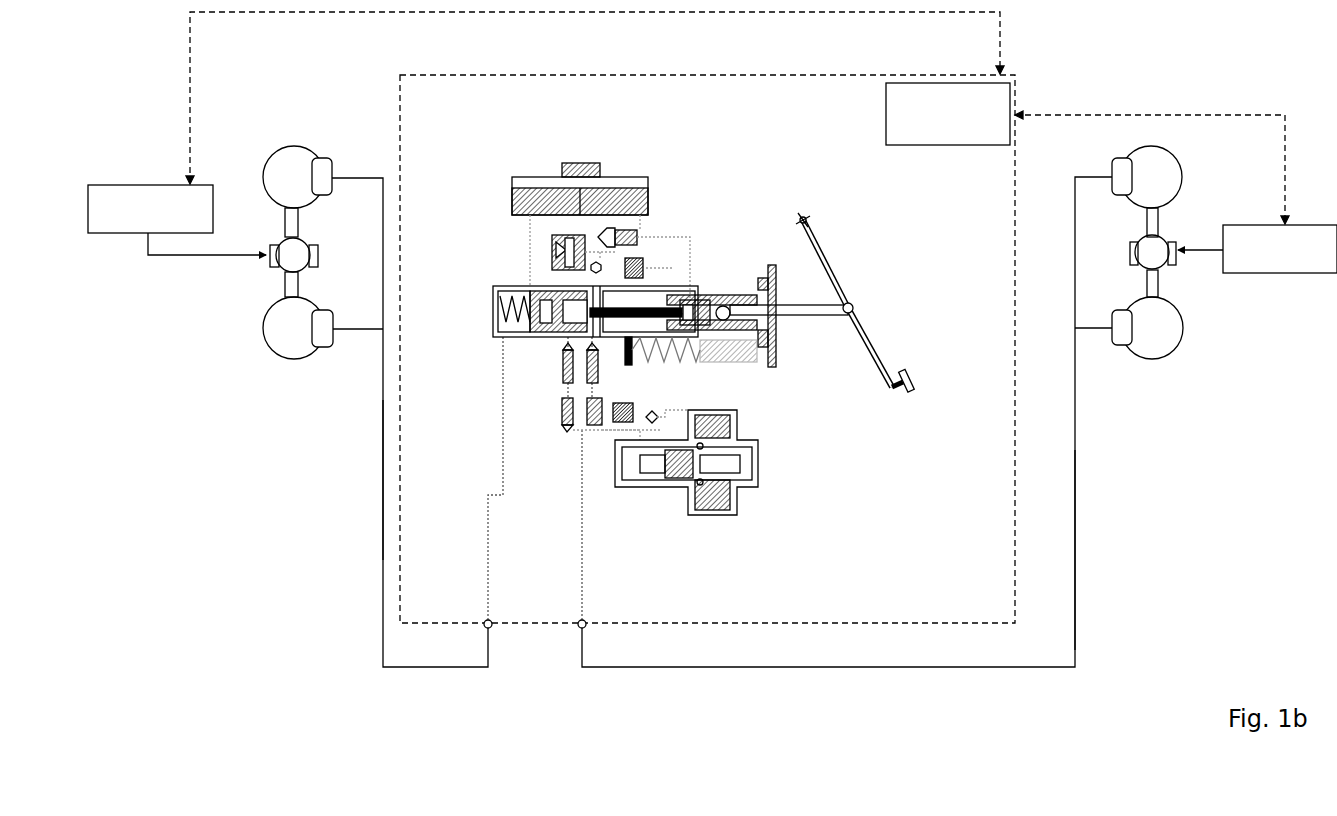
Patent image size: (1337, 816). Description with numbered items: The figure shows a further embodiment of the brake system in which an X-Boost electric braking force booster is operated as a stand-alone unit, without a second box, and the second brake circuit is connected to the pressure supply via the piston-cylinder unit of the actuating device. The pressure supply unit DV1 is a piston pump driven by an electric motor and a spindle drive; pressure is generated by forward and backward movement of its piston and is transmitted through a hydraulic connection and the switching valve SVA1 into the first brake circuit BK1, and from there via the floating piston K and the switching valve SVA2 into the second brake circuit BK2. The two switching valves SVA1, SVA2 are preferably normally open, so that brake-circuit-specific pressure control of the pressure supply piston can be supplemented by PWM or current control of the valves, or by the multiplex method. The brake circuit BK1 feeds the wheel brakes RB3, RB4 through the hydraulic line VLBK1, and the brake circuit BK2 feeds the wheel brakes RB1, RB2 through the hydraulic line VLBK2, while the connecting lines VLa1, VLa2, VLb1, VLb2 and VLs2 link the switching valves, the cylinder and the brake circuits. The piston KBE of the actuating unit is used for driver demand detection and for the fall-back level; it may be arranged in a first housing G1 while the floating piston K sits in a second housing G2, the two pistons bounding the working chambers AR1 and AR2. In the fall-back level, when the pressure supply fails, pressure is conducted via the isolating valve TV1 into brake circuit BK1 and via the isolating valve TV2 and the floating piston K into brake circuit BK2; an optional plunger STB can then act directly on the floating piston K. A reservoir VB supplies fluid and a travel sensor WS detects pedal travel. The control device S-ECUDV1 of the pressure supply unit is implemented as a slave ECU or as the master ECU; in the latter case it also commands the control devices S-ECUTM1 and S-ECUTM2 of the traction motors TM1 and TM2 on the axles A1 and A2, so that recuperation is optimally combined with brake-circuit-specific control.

The open-loop and closed-loop control device of the second traction motor S-ECUTM2 is at (150, 209).
The open-loop and closed-loop control device of the pressure supply unit S-ECUDV1 is at (948, 114).
The open-loop and closed-loop control device of the first traction motor S-ECUTM1 is at (1280, 249).
The pressure supply unit DV1 is at (857, 75).
The wheel brake 1 RB1 is at (318, 160).
The wheel brake 2 RB2 is at (335, 327).
The wheel brake 3 RB3 is at (1125, 158).
The wheel brake 4 RB4 is at (1120, 347).
The first axle A1 is at (1160, 226).
The second axle A2 is at (293, 232).
The traction motor TM1 is at (1157, 258).
The traction motor TM2 is at (267, 257).
The brake circuit BK1 is at (1073, 258).
The brake circuit BK2 is at (382, 230).
The hydraulic line of first brake circuit VLBK1 is at (1080, 575).
The hydraulic line of second brake circuit VLBK2 is at (382, 478).
The hydraulic connecting line s2 VLs2 is at (485, 523).
The hydraulic connecting line a1 VLa1 is at (580, 530).
The hydraulic connecting line b1 VLb1 is at (586, 621).
The hydraulic connecting line b2 VLb2 is at (483, 622).
The hydraulic connecting line a2' VLa2 is at (557, 395).
The switching valve SVA1 is at (595, 427).
The switching valve SVA2 is at (560, 420).
The isolating valve TV1 is at (598, 360).
The isolating valve TV2 is at (563, 360).
The reservoir VB is at (633, 157).
The travel sensor WS is at (552, 250).
The first working chamber AR1 is at (537, 278).
The second working chamber AR2 is at (502, 322).
The floating piston K is at (540, 292).
The first housing G1 is at (630, 306).
The second housing G2 is at (493, 332).
The plunger STB is at (665, 294).
The piston of the actuating unit KBE is at (708, 297).